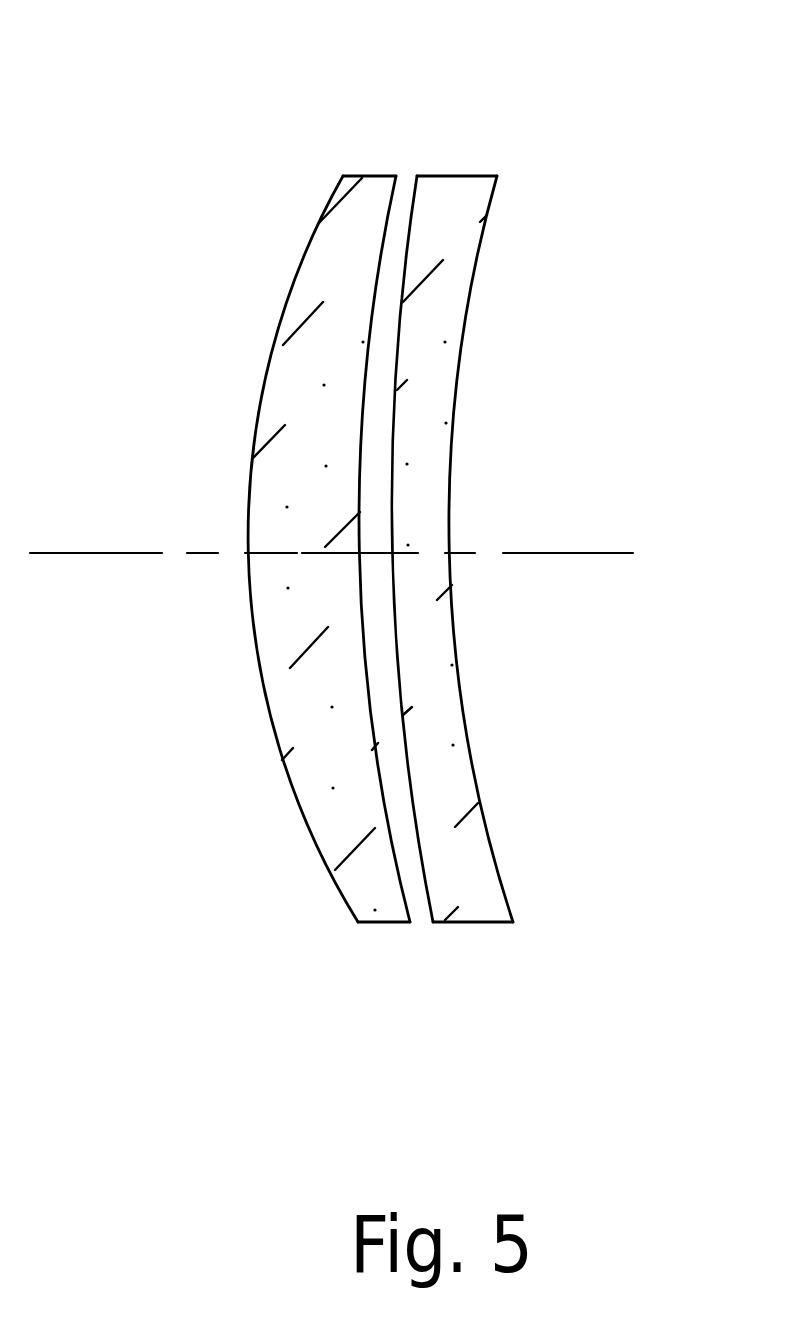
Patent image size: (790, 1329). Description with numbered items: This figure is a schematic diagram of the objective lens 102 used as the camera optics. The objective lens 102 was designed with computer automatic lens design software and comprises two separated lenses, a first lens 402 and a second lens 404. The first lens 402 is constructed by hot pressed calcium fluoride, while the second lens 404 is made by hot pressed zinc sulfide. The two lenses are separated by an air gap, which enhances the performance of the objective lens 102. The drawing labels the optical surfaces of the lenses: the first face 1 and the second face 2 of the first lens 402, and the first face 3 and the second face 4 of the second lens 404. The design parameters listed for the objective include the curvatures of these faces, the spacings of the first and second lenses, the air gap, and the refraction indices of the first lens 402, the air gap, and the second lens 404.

The objective lens 102 is at (496, 153).
The first face 1 is at (320, 269).
The second face 2 is at (387, 332).
The first face of the second lens 3 is at (424, 406).
The second face 4 is at (470, 491).
The first lens 402 is at (300, 693).
The second lens 404 is at (445, 683).